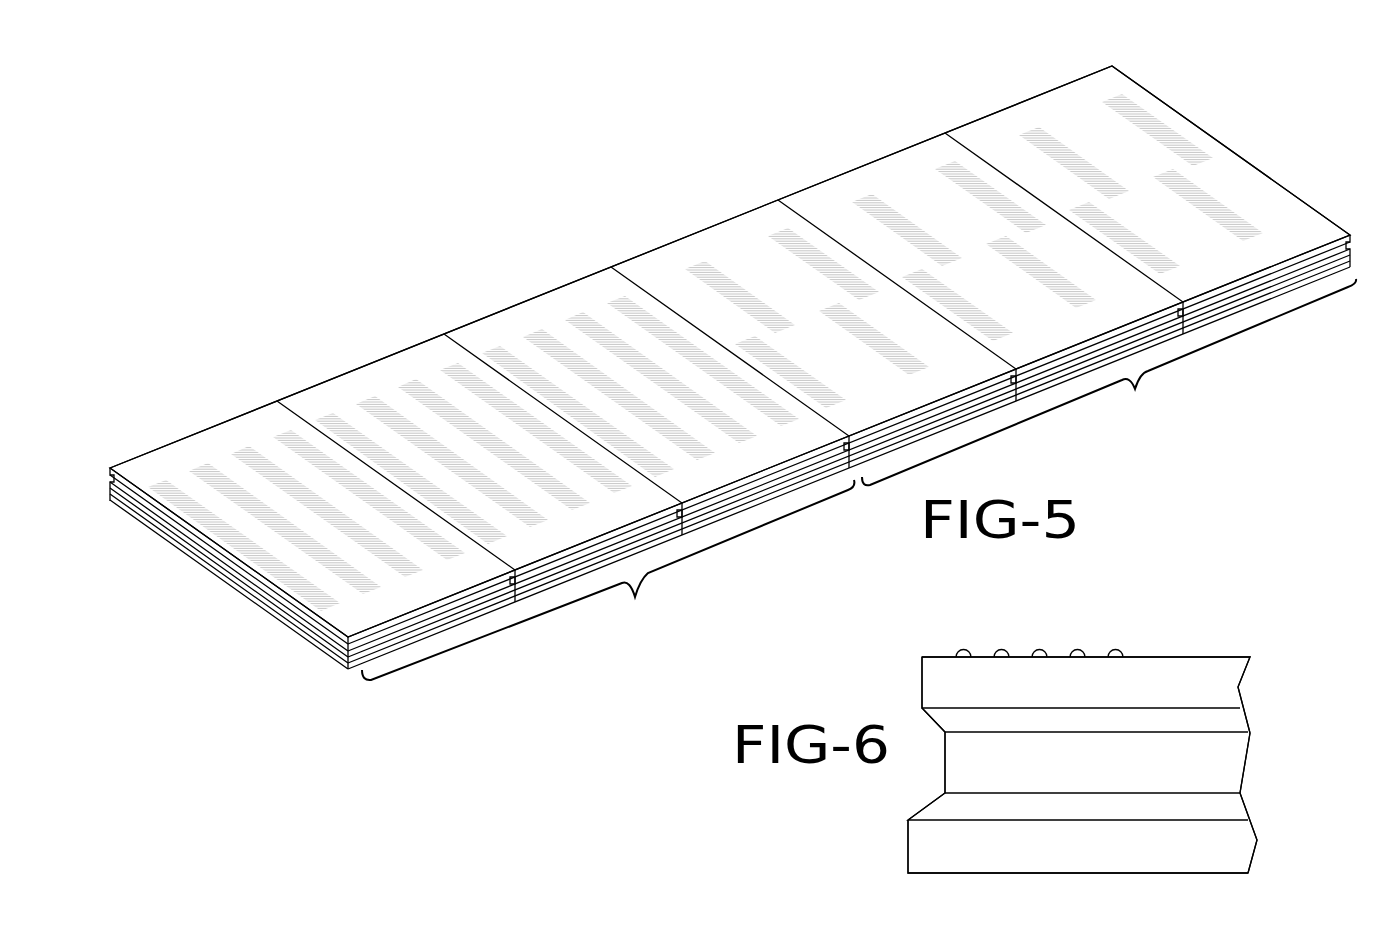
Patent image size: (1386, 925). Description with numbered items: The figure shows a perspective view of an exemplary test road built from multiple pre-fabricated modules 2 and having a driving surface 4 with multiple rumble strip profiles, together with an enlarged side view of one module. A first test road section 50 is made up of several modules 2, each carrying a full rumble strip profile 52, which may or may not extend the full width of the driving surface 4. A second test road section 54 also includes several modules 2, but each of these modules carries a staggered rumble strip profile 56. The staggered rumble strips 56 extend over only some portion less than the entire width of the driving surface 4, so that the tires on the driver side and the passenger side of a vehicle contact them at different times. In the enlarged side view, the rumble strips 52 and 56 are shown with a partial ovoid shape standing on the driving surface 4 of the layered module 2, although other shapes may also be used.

In FIG. 5, the module 2 is at (190, 427).
In FIG. 6, the module 2 is at (1225, 614).
In FIG. 5, the driving surface 4 is at (752, 253).
In FIG. 6, the driving surface 4 is at (1153, 656).
In FIG. 5, the first test road section 50 is at (608, 580).
In FIG. 6, the first test road section 50 is at (890, 832).
In FIG. 5, the full rumble strip profile 52 is at (162, 490).
In FIG. 6, the full rumble strip profile 52 is at (963, 656).
In FIG. 5, the second test road section 54 is at (1109, 382).
In FIG. 6, the second test road section 54 is at (1086, 750).
In FIG. 5, the staggered rumble strip profile 56 is at (1053, 140).
In FIG. 6, the staggered rumble strip profile 56 is at (1096, 653).